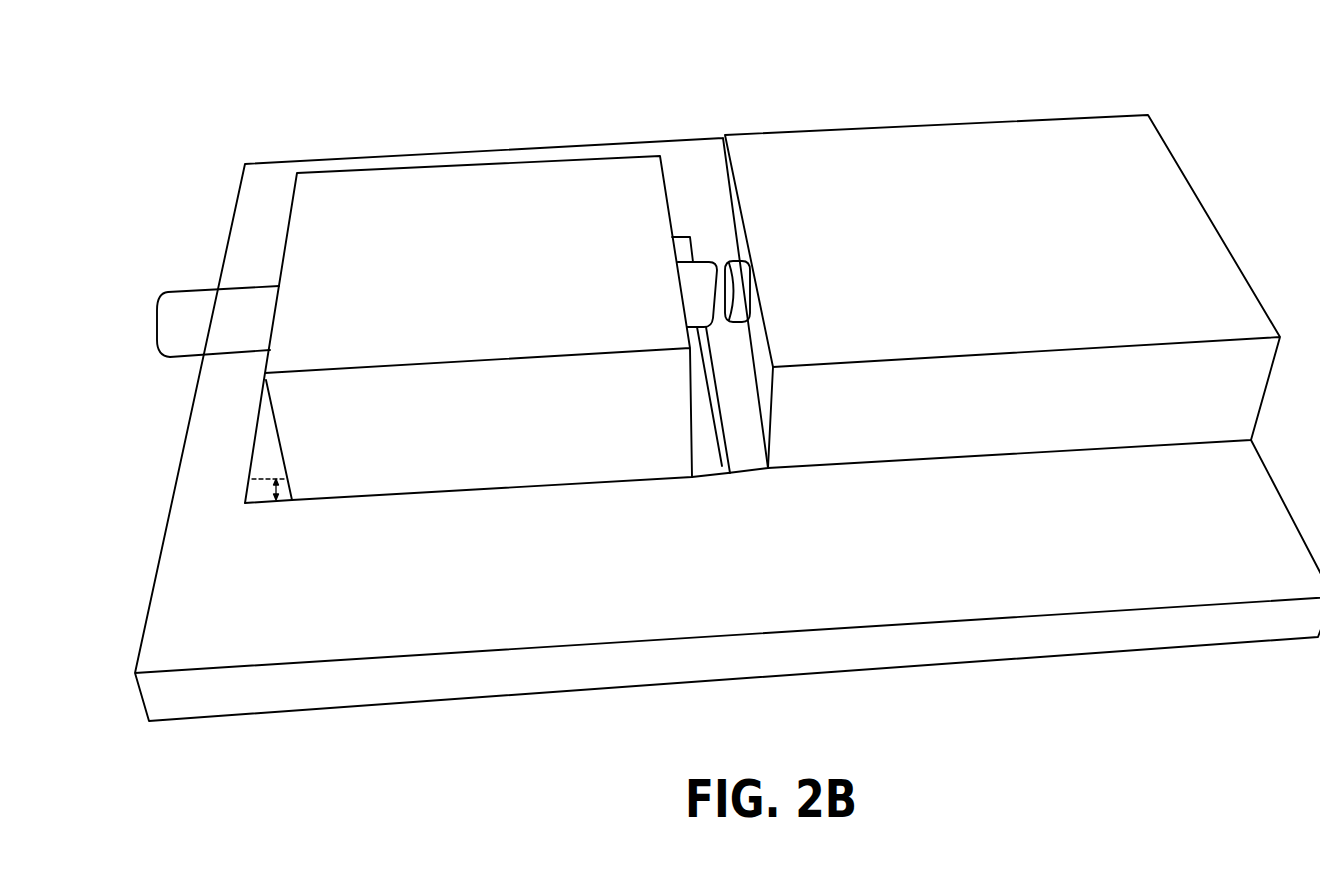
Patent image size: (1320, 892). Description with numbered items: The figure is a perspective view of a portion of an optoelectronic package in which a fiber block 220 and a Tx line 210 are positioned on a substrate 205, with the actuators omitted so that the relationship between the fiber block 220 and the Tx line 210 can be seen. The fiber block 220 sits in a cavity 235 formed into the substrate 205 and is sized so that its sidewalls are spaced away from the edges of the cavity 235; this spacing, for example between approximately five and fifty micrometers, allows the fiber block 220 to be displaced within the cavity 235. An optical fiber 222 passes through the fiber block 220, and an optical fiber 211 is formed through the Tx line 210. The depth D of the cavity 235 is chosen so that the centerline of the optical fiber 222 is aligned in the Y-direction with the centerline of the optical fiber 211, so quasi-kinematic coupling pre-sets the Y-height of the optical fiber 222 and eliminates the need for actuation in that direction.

The substrate 205 is at (1155, 627).
The Tx line 210 is at (888, 172).
The optical fiber 211 is at (722, 262).
The fiber block 220 is at (428, 202).
The optical fiber 222 is at (183, 303).
The cavity 235 is at (740, 465).
The depth of the cavity D is at (263, 494).